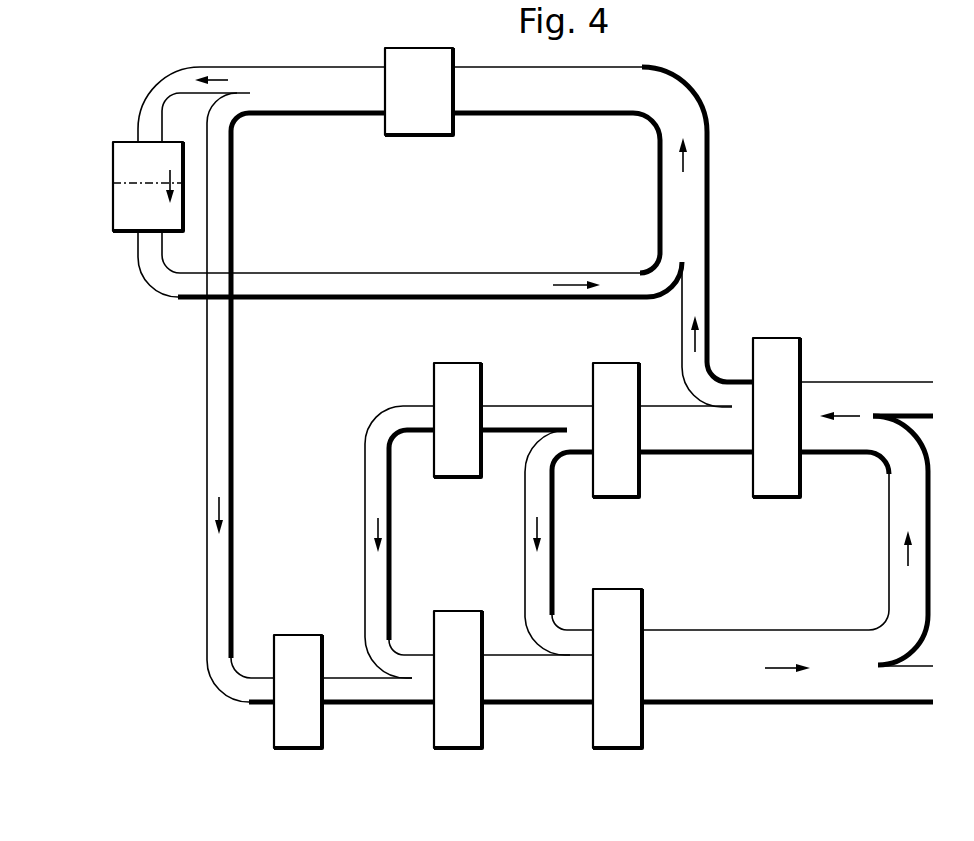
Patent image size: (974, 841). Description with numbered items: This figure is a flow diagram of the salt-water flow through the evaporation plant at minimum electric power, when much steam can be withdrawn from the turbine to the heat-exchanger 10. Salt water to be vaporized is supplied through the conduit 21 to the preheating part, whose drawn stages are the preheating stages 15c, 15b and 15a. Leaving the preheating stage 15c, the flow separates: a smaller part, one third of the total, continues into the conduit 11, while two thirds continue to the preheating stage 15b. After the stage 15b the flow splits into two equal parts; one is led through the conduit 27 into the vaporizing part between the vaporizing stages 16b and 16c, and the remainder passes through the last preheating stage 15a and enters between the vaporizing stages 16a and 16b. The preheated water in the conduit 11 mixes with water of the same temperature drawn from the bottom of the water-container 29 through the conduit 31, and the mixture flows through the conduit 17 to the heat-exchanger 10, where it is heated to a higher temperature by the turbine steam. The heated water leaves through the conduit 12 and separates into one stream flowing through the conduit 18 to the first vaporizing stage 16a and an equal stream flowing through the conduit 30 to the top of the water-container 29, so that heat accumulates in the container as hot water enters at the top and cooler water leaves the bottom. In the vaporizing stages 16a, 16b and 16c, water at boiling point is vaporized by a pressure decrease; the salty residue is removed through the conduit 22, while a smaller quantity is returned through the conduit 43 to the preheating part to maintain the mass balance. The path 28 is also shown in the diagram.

The heat-exchanger 10 is at (420, 55).
The conduit 12 is at (318, 78).
The conduit 30 is at (189, 75).
The water-container 29 is at (113, 173).
The conduit 31 is at (448, 283).
The conduit 17 is at (692, 128).
The conduit 11 is at (704, 381).
The conduit 18 is at (218, 414).
The loop pipe to heat exchanger 16b 28 is at (377, 499).
The conduit 27 is at (537, 513).
The conduit 21 is at (927, 392).
The conduit 43 is at (895, 527).
The conduit 22 is at (915, 684).
The preheating stage 15a is at (456, 376).
The preheating stage 15b is at (622, 373).
The preheating stage 15c is at (767, 353).
The vaporizing stage 16a is at (300, 639).
The vaporizing stage 16b is at (465, 619).
The vaporizing stage 16c is at (627, 600).